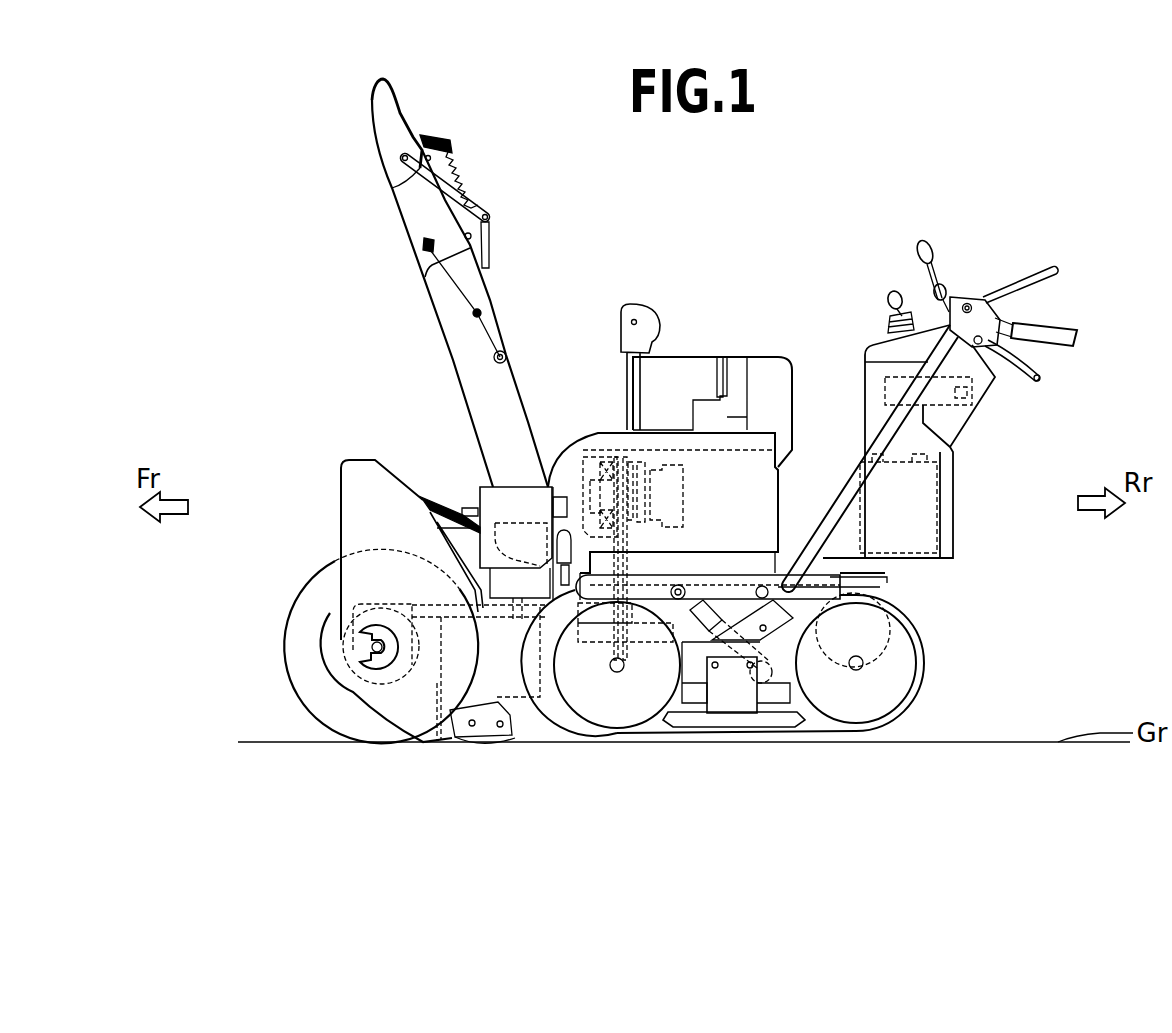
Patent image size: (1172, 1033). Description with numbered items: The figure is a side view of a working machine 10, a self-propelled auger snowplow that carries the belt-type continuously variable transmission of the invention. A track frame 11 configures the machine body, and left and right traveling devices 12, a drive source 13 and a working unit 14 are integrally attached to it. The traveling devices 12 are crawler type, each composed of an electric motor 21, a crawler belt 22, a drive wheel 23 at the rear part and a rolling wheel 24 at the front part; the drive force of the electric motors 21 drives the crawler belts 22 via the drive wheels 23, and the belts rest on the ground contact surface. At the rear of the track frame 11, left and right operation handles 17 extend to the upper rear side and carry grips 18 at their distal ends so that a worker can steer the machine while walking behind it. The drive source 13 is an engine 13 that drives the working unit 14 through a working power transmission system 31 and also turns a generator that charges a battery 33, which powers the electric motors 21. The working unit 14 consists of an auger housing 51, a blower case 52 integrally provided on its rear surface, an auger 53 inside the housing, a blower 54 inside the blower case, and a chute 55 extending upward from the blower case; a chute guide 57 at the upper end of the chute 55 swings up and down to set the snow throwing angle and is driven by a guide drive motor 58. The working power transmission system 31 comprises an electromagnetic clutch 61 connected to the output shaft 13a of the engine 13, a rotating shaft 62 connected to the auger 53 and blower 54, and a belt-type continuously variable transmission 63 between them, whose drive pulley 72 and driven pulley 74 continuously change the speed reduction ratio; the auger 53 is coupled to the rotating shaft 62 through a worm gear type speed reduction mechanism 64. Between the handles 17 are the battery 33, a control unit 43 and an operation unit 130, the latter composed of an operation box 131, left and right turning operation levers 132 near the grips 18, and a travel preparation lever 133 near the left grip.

The working machine 10 is at (187, 192).
The track frame 11 is at (692, 687).
The traveling devices 12 is at (912, 710).
The drive source 13 is at (667, 445).
The output shaft 13a is at (660, 465).
The working unit 14 is at (270, 669).
The operation handles 17 is at (1005, 315).
The grips 18 is at (1070, 332).
The electric motors 21 is at (882, 590).
The crawler belts 22 is at (930, 668).
The drive wheels 23 is at (853, 713).
The rolling wheels 24 is at (603, 707).
The working power transmission system 31 is at (574, 482).
The battery 33 is at (942, 477).
The control unit 43 is at (992, 385).
The auger housing 51 is at (345, 467).
The blower case 52 is at (440, 505).
The auger 53 is at (290, 600).
The blower 54 is at (517, 525).
The chute 55 is at (440, 288).
The chute guide 57 is at (380, 133).
The guide drive motor 58 is at (509, 350).
The electromagnetic clutch 61 is at (592, 468).
The rotating shaft 62 is at (441, 700).
The belt-type continuously variable transmission 63 is at (618, 457).
The worm gear type speed reduction mechanism 64 is at (380, 686).
The drive pulley 72 is at (652, 445).
The driven pulley 74 is at (630, 650).
The operation unit 130 is at (871, 302).
The operation box 131 is at (866, 340).
The turning operation levers 132 is at (1042, 356).
The travel preparation lever 133 is at (1050, 272).